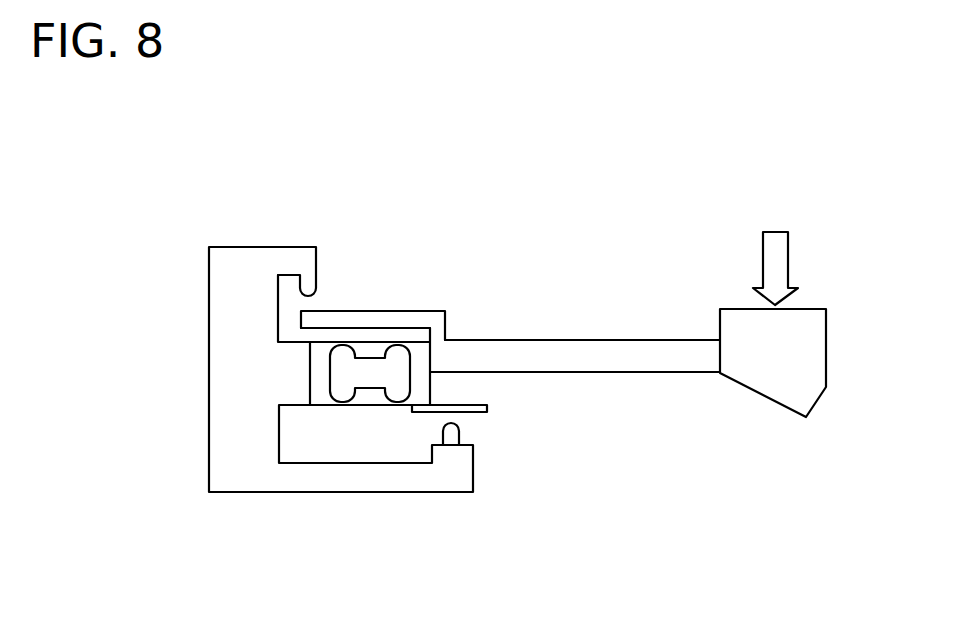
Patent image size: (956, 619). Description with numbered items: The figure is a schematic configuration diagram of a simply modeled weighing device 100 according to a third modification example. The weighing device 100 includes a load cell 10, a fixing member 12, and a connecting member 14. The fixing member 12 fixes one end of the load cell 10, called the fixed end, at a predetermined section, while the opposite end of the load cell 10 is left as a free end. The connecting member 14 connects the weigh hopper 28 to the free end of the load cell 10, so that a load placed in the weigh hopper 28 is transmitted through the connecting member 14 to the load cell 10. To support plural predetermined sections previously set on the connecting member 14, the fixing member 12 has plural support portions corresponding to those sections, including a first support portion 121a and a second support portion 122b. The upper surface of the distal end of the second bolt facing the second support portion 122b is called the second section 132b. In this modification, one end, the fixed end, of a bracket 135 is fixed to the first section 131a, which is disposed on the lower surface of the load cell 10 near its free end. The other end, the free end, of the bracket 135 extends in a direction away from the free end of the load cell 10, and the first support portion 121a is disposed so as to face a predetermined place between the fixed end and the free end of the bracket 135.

The weighing device 100 is at (677, 199).
The fixing member 12 is at (233, 265).
The second section 122b is at (314, 288).
The second section 132b is at (318, 309).
The load cell 10 is at (322, 400).
The connecting member 14 is at (490, 354).
The weigh hopper 28 is at (778, 378).
The first section 131a is at (423, 396).
The bracket 135 is at (393, 416).
The first support portion 121a is at (456, 433).